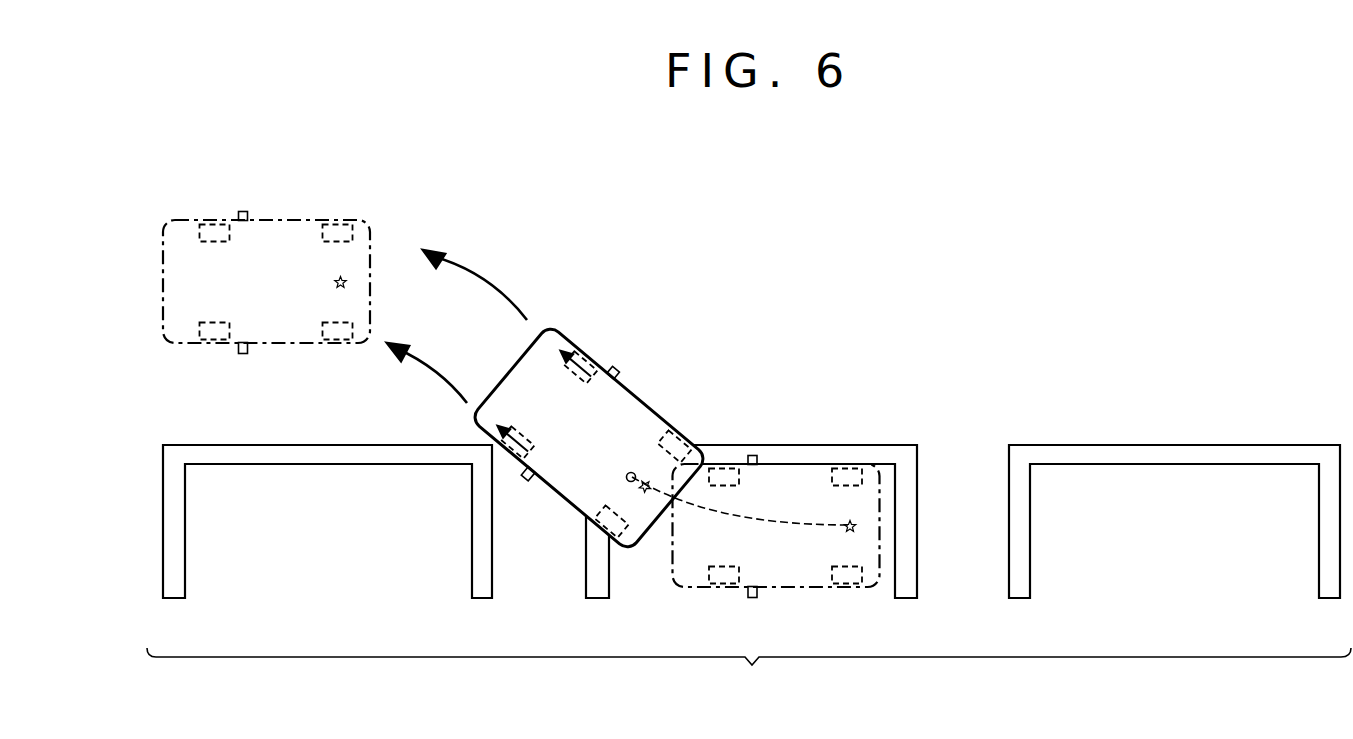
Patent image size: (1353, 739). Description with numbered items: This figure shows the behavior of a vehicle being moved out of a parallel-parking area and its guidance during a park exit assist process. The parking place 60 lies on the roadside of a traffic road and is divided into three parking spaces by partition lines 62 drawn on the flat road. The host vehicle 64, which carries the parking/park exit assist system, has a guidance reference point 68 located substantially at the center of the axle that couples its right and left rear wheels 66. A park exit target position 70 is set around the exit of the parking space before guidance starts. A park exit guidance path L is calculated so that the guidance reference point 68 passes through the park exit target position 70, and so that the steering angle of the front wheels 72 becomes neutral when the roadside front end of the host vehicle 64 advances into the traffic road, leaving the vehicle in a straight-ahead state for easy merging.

The parking place 60 is at (749, 572).
The partition lines 62 is at (173, 590).
The host vehicle 64 is at (277, 232).
The rear wheels 66 is at (338, 228).
The guidance reference point 68 is at (345, 278).
The park exit target position 70 is at (632, 482).
The front wheels 72 is at (592, 358).
The park exit guidance path L is at (803, 522).